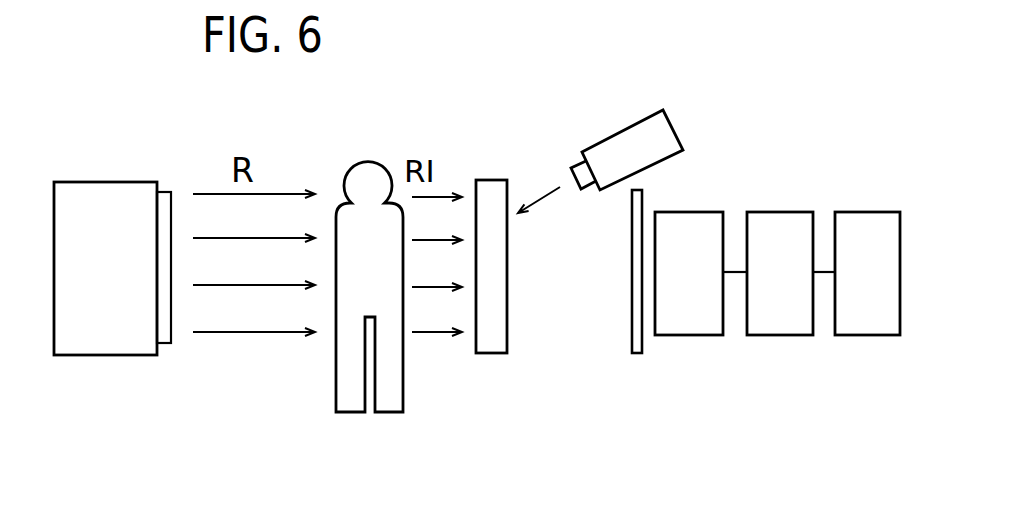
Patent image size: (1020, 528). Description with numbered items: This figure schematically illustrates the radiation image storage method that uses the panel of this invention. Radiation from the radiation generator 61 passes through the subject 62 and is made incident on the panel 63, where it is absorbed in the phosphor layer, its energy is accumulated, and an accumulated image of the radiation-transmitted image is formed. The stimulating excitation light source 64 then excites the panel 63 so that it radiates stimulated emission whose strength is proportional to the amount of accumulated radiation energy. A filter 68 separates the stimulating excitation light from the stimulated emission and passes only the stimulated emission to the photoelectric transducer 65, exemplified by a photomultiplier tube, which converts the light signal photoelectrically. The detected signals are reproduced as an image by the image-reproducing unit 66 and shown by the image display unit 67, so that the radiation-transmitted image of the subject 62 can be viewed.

The radiation generator 61 is at (109, 343).
The subject 62 is at (352, 397).
The panel 63 is at (488, 343).
The stimulating excitation light source 64 is at (619, 151).
The photoelectric transducer 65 is at (693, 325).
The image-reproducing unit 66 is at (787, 325).
The image display unit 67 is at (872, 325).
The filter 68 is at (633, 340).